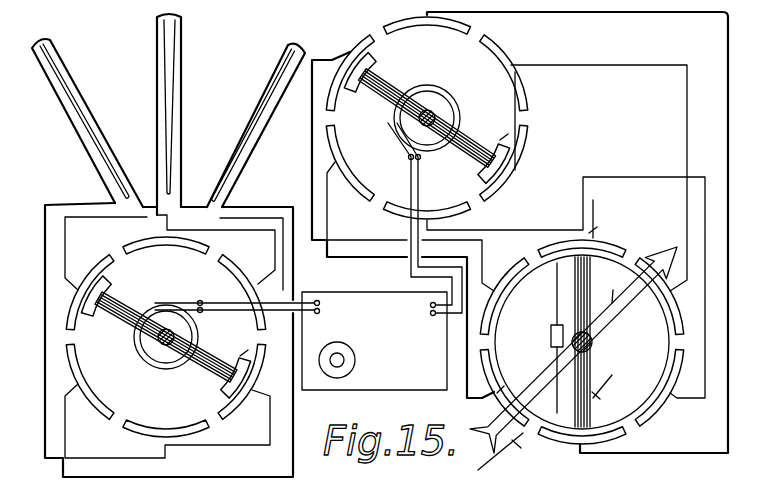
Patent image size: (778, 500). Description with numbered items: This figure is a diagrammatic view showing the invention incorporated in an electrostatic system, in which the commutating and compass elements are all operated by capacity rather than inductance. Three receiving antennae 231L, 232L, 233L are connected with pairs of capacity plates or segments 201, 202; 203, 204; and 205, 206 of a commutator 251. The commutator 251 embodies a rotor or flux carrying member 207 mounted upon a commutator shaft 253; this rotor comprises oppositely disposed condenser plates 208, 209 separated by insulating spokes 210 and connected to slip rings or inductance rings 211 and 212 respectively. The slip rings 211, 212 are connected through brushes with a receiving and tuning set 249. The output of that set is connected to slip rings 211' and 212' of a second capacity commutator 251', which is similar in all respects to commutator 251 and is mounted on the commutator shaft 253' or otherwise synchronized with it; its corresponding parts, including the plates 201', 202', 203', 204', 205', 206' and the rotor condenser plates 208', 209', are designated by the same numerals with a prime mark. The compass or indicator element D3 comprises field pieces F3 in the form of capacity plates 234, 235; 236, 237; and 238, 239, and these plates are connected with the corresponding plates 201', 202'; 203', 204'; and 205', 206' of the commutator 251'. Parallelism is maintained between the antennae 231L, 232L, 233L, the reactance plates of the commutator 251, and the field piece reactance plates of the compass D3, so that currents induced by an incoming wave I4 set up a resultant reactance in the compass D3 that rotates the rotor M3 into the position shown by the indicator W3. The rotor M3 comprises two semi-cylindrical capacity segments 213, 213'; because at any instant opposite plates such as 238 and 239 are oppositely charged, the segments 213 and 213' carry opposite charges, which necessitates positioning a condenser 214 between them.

The receiving antenna 231L is at (66, 112).
The receiving antenna 232L is at (157, 87).
The receiving antenna 233L is at (263, 133).
The incoming wave I4 is at (236, 58).
The commutator 251 is at (150, 340).
The capacity commutator 251' is at (520, 232).
The capacity plate 201 is at (90, 284).
The capacity plate 202 is at (242, 390).
The capacity plate 203 is at (166, 250).
The capacity plate 204 is at (166, 426).
The capacity plate 205 is at (242, 286).
The capacity plate 206 is at (90, 391).
The rotor 207 is at (144, 358).
The condenser plate 208 is at (166, 325).
The condenser plate 209 is at (246, 348).
The insulating spoke 210 is at (113, 314).
The slip ring 211 is at (234, 314).
The slip ring 212 is at (234, 324).
The commutator shaft 253 is at (162, 361).
The capacity plate 201' is at (350, 70).
The capacity plate 202' is at (511, 165).
The capacity plate 203' is at (427, 31).
The capacity plate 204' is at (427, 205).
The capacity plate 205' is at (523, 73).
The capacity plate 206' is at (359, 163).
The condenser plate 208' is at (426, 118).
The condenser plate 209' is at (501, 130).
The slip ring 211' is at (420, 185).
The slip ring 212' is at (431, 189).
The commutator shaft 253' is at (442, 118).
The receiving and tuning set 249 is at (372, 386).
The capacity segment 213 is at (582, 342).
The capacity segment 213' is at (614, 342).
The condenser 214 is at (549, 331).
The capacity plate 234 is at (515, 268).
The capacity plate 235 is at (648, 415).
The capacity plate 236 is at (552, 443).
The capacity plate 237 is at (618, 241).
The capacity plate 238 is at (677, 303).
The capacity plate 239 is at (497, 393).
The field pieces F3 is at (603, 216).
The indicator W3 is at (607, 287).
The rotor M3 is at (610, 380).
The compass D3 is at (500, 458).